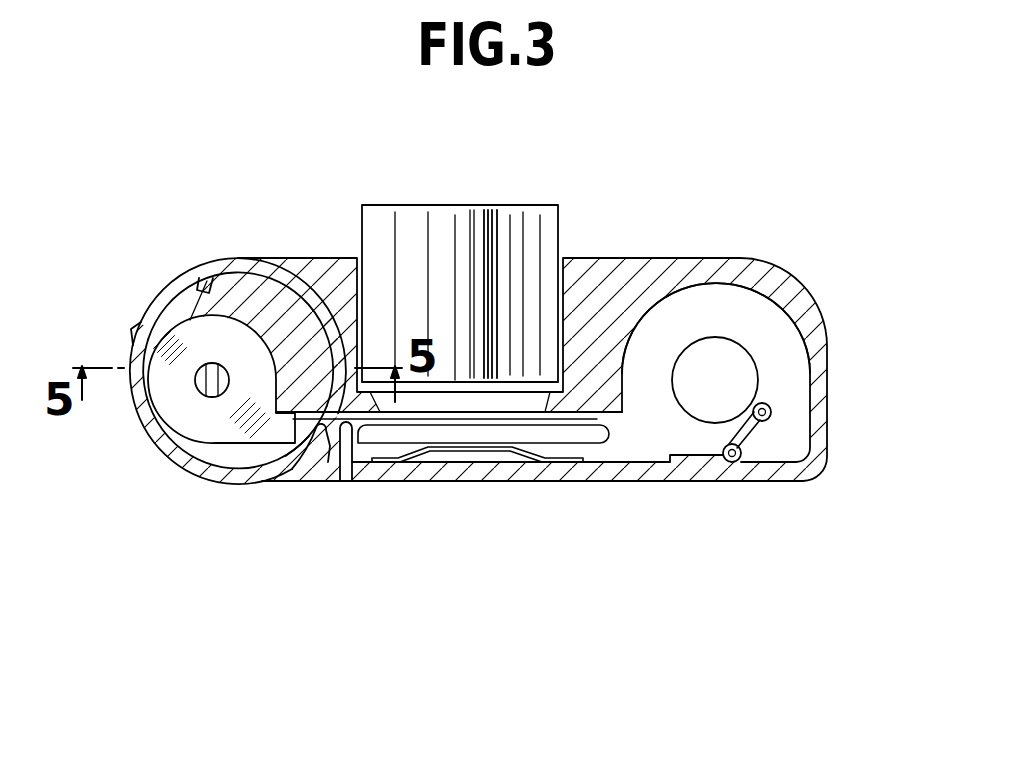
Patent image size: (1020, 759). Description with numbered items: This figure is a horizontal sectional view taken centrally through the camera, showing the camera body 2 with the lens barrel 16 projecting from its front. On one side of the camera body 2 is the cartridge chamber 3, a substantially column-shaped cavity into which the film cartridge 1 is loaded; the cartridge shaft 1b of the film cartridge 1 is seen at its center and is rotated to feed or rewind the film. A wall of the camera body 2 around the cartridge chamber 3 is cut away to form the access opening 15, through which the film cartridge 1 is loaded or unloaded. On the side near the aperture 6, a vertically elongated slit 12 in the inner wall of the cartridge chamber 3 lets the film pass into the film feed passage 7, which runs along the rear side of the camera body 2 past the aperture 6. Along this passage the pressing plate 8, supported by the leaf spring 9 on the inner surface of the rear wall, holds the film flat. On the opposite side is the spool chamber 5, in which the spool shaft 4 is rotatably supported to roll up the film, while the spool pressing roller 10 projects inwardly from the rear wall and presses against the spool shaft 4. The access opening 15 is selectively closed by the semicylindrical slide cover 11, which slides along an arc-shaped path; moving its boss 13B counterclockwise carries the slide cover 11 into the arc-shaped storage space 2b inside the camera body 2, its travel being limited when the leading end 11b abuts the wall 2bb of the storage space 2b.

The film cartridge 1 is at (178, 412).
The cartridge shaft 1b is at (227, 400).
The camera body 2 is at (622, 290).
The storage space 2b is at (254, 283).
The wall of the storage space 2bb is at (207, 277).
The cartridge chamber 3 is at (183, 317).
The spool shaft 4 is at (738, 360).
The spool chamber 5 is at (732, 315).
The aperture 6 is at (533, 403).
The film feed passage 7 is at (364, 425).
The pressing plate 8 is at (598, 433).
The leaf spring 9 is at (530, 455).
The spool pressing roller 10 is at (772, 412).
The slide cover 11 is at (132, 408).
The leading end of the slide cover 11b is at (312, 440).
The slit 12 is at (334, 462).
The boss 13B is at (132, 325).
The access opening 15 is at (205, 447).
The lens barrel 16 is at (510, 245).